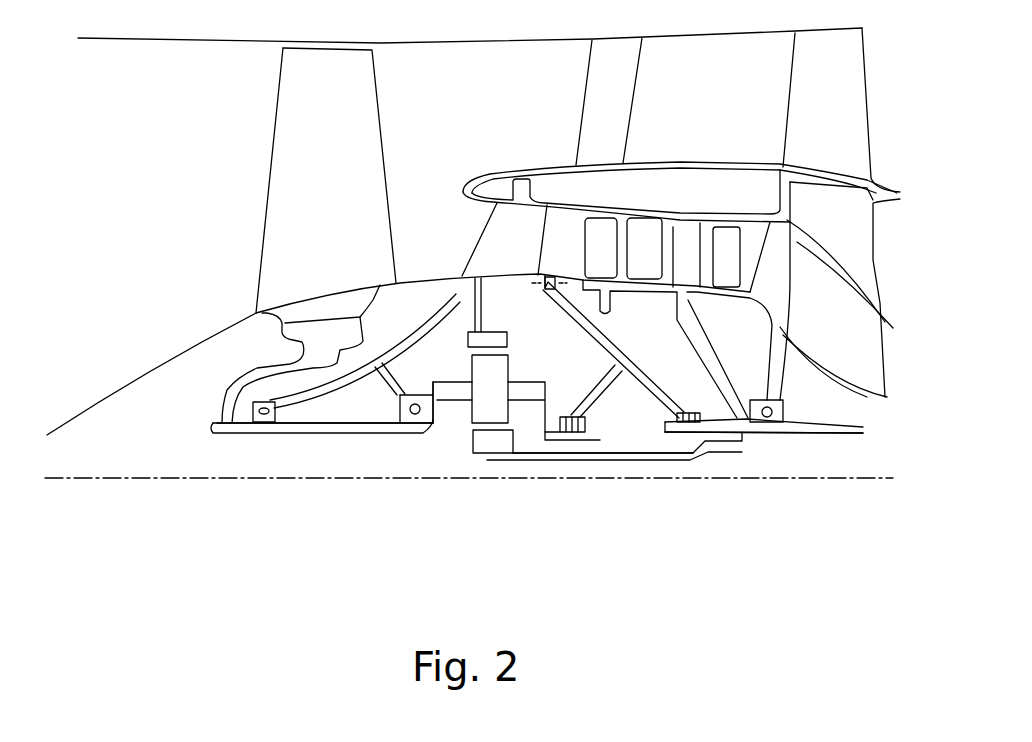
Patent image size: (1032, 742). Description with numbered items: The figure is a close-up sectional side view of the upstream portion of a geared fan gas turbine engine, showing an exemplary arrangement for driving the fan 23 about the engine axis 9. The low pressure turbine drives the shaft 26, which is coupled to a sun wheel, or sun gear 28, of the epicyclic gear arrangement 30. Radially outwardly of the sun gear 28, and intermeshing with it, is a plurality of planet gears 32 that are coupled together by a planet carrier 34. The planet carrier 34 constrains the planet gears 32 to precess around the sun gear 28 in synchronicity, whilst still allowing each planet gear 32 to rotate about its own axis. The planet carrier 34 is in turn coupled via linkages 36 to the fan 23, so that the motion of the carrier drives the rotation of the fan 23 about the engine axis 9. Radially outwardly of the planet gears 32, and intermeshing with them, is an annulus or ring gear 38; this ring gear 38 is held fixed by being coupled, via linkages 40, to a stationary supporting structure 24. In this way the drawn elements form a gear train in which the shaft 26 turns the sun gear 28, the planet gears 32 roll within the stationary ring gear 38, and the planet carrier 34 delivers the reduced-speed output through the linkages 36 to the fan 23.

The engine axis 9 is at (247, 478).
The fan 23 is at (288, 183).
The stationary supporting structure 24 is at (498, 237).
The shaft 26 is at (648, 458).
The sun gear 28 is at (490, 440).
The epicyclic gear arrangement 30 is at (436, 448).
The planet gears 32 is at (475, 410).
The planet carrier 34 is at (535, 428).
The linkages 36 is at (433, 421).
The ring gear 38 is at (468, 341).
The linkages 40 is at (487, 310).